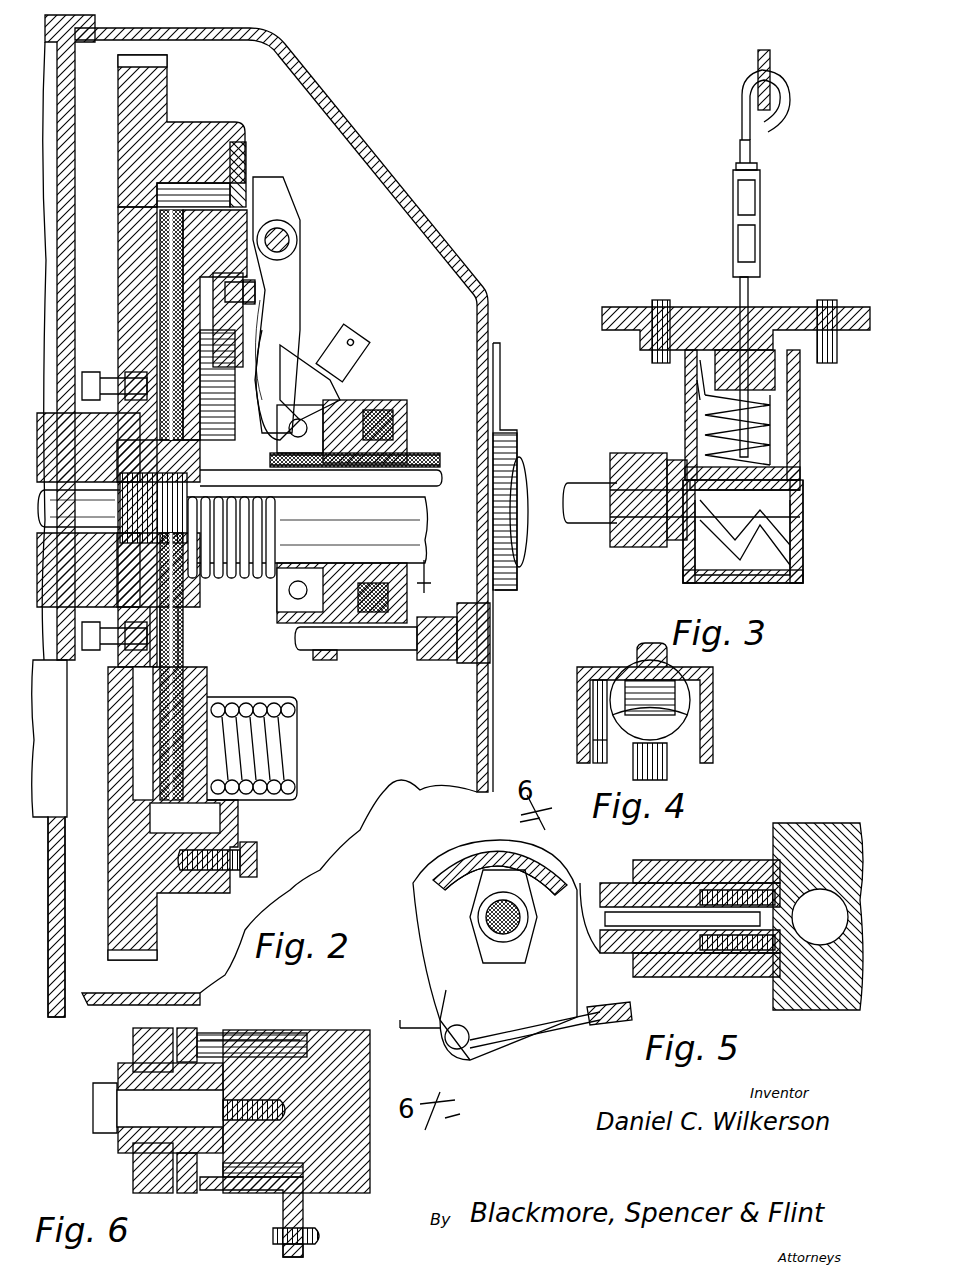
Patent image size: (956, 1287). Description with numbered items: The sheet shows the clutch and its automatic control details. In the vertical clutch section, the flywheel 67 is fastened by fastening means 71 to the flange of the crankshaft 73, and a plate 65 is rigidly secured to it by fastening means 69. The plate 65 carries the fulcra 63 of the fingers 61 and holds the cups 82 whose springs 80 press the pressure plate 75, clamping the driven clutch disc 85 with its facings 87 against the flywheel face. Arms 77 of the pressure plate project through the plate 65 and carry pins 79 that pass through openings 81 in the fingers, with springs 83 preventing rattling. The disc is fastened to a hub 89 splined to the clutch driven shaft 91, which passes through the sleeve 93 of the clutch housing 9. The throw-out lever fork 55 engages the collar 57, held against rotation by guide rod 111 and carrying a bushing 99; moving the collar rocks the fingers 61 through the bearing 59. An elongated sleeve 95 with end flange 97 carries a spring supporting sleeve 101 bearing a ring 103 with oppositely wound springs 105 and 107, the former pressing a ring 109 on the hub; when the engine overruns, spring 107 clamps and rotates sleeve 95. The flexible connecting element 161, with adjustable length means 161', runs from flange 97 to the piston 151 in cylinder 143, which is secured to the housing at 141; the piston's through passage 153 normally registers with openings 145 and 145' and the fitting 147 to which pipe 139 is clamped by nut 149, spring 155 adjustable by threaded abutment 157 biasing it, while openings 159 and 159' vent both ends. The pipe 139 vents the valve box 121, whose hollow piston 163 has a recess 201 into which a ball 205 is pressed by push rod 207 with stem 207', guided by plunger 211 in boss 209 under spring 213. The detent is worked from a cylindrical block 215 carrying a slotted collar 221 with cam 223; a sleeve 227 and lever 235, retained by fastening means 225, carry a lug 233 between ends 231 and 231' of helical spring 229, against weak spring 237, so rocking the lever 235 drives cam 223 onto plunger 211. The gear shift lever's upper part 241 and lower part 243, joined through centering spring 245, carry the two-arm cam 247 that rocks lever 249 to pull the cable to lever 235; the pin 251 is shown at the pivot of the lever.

In FIG. 2, the clutch housing 9 is at (282, 48).
In FIG. 2, the fork 55 is at (400, 452).
In FIG. 2, the collar 57 is at (368, 400).
In FIG. 2, the bearing 59 is at (355, 370).
In FIG. 2, the fingers 61 is at (300, 296).
In FIG. 2, the fulcra 63 is at (262, 290).
In FIG. 2, the plate 65 is at (243, 322).
In FIG. 2, the flywheel 67 is at (185, 885).
In FIG. 2, the fastening means 69 is at (258, 856).
In FIG. 2, the fastening means 71 is at (68, 655).
In FIG. 2, the crankshaft 73 is at (50, 430).
In FIG. 2, the pressure plate 75 is at (178, 208).
In FIG. 2, the arms 77 is at (280, 182).
In FIG. 2, the pins 79 is at (289, 240).
In FIG. 2, the springs 80 is at (280, 736).
In FIG. 2, the openings 81 is at (290, 222).
In FIG. 2, the cups 82 is at (298, 790).
In FIG. 2, the springs 83 is at (247, 168).
In FIG. 2, the driven clutch disc 85 is at (160, 310).
In FIG. 2, the facings 87 is at (160, 240).
In FIG. 2, the hub 89 is at (130, 560).
In FIG. 2, the clutch driven shaft 91 is at (50, 462).
In FIG. 2, the sleeve 93 is at (420, 458).
In FIG. 2, the elongated sleeve 95 is at (245, 400).
In FIG. 2, the end flange 97 is at (428, 470).
In FIG. 3, the end flange 97 is at (772, 58).
In FIG. 2, the bushing 99 is at (345, 600).
In FIG. 2, the spring supporting sleeve 101 is at (300, 395).
In FIG. 2, the ring 103 is at (215, 600).
In FIG. 2, the spring 105 is at (75, 530).
In FIG. 2, the spring 107 is at (250, 580).
In FIG. 2, the ring 109 is at (185, 610).
In FIG. 2, the guide rod 111 is at (380, 640).
In FIG. 5, the valve box 121 is at (790, 1000).
In FIG. 3, the pipe 139 is at (575, 482).
In FIG. 3, the fastening 141 is at (648, 362).
In FIG. 3, the cylinder 143 is at (805, 552).
In FIG. 3, the opening 145 is at (778, 473).
In FIG. 3, the opening 145' is at (658, 558).
In FIG. 3, the fitting 147 is at (690, 560).
In FIG. 3, the nut 149 is at (628, 455).
In FIG. 3, the piston 151 is at (790, 445).
In FIG. 3, the through passage 153 is at (790, 505).
In FIG. 3, the spring 155 is at (772, 408).
In FIG. 3, the threaded abutment 157 is at (790, 330).
In FIG. 3, the opening 159 is at (639, 386).
In FIG. 3, the opening 159' is at (784, 552).
In FIG. 2, the flexible connecting element 161 is at (478, 511).
In FIG. 3, the flexible connecting element 161 is at (712, 365).
In FIG. 3, the adjustable length means 161' is at (712, 208).
In FIG. 5, the hollow piston 163 is at (855, 1000).
In FIG. 5, the recess 201 is at (858, 830).
In FIG. 5, the ball 205 is at (825, 895).
In FIG. 5, the push rod 207 is at (781, 848).
In FIG. 5, the stem 207' is at (680, 884).
In FIG. 5, the boss 209 is at (715, 970).
In FIG. 5, the plunger 211 is at (590, 953).
In FIG. 5, the spring 213 is at (718, 893).
In FIG. 6, the cylindrical block 215 is at (340, 1032).
In FIG. 5, the slotted collar 221 is at (470, 852).
In FIG. 6, the slotted collar 221 is at (200, 1180).
In FIG. 5, the cam 223 is at (560, 1022).
In FIG. 6, the cam 223 is at (145, 1042).
In FIG. 5, the fastening means 225 is at (478, 930).
In FIG. 6, the fastening means 225 is at (100, 1118).
In FIG. 5, the sleeve 227 is at (560, 875).
In FIG. 6, the sleeve 227 is at (262, 1190).
In FIG. 5, the helical spring 229 is at (550, 905).
In FIG. 6, the helical spring 229 is at (280, 1033).
In FIG. 5, the spring end 231 is at (525, 858).
In FIG. 6, the spring end 231 is at (250, 1011).
In FIG. 5, the spring end 231' is at (486, 859).
In FIG. 6, the spring end 231' is at (351, 1006).
In FIG. 5, the lug 233 is at (460, 866).
In FIG. 6, the lug 233 is at (215, 1040).
In FIG. 5, the lever 235 is at (470, 1040).
In FIG. 6, the lever 235 is at (305, 1214).
In FIG. 5, the weak spring 237 is at (430, 1032).
In FIG. 6, the weak spring 237 is at (283, 1250).
In FIG. 4, the upper manually operable part 241 is at (637, 652).
In FIG. 4, the lower actuated part 243 is at (668, 760).
In FIG. 4, the centering spring 245 is at (690, 700).
In FIG. 4, the two-arm cam 247 is at (593, 700).
In FIG. 4, the lever 249 is at (592, 740).
In FIG. 5, the nut 251 is at (634, 1012).
In FIG. 6, the nut 251 is at (323, 1236).